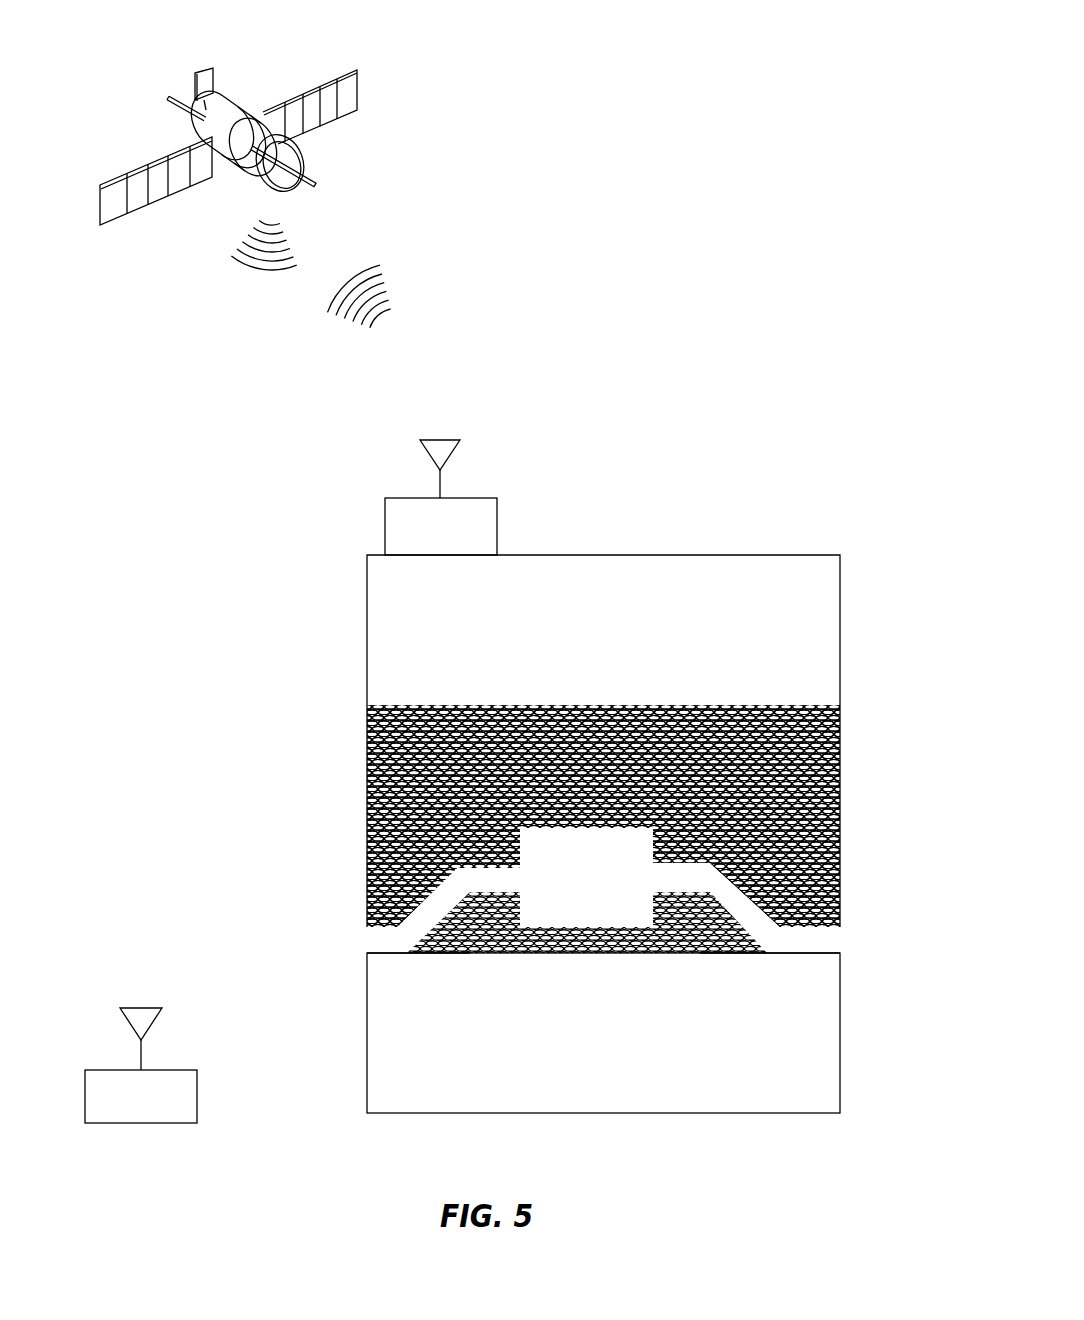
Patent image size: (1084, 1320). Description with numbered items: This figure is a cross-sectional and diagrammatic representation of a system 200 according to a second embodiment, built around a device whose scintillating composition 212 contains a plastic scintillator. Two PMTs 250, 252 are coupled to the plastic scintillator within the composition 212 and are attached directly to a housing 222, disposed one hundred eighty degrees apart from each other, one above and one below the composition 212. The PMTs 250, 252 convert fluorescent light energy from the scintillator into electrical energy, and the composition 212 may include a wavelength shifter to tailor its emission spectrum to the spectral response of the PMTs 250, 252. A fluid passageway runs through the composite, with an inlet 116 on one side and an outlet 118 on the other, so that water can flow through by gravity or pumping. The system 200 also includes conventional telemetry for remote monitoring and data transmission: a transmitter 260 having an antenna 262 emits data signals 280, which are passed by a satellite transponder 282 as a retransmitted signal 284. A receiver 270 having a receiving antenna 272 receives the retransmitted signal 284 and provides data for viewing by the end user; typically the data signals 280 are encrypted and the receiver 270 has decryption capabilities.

The satellite transponder 282 is at (261, 72).
The retransmitted signal 284 is at (243, 247).
The data signals 280 is at (380, 287).
The antenna 262 is at (446, 438).
The transmitter 260 is at (497, 530).
The PMT 250 is at (808, 620).
The composition 212 is at (840, 765).
The housing 222 is at (840, 836).
The system 200 is at (563, 834).
The inlet 116 is at (378, 940).
The outlet 118 is at (824, 940).
The PMT 252 is at (807, 1042).
The receiving antenna 272 is at (160, 1022).
The receiver 270 is at (197, 1095).